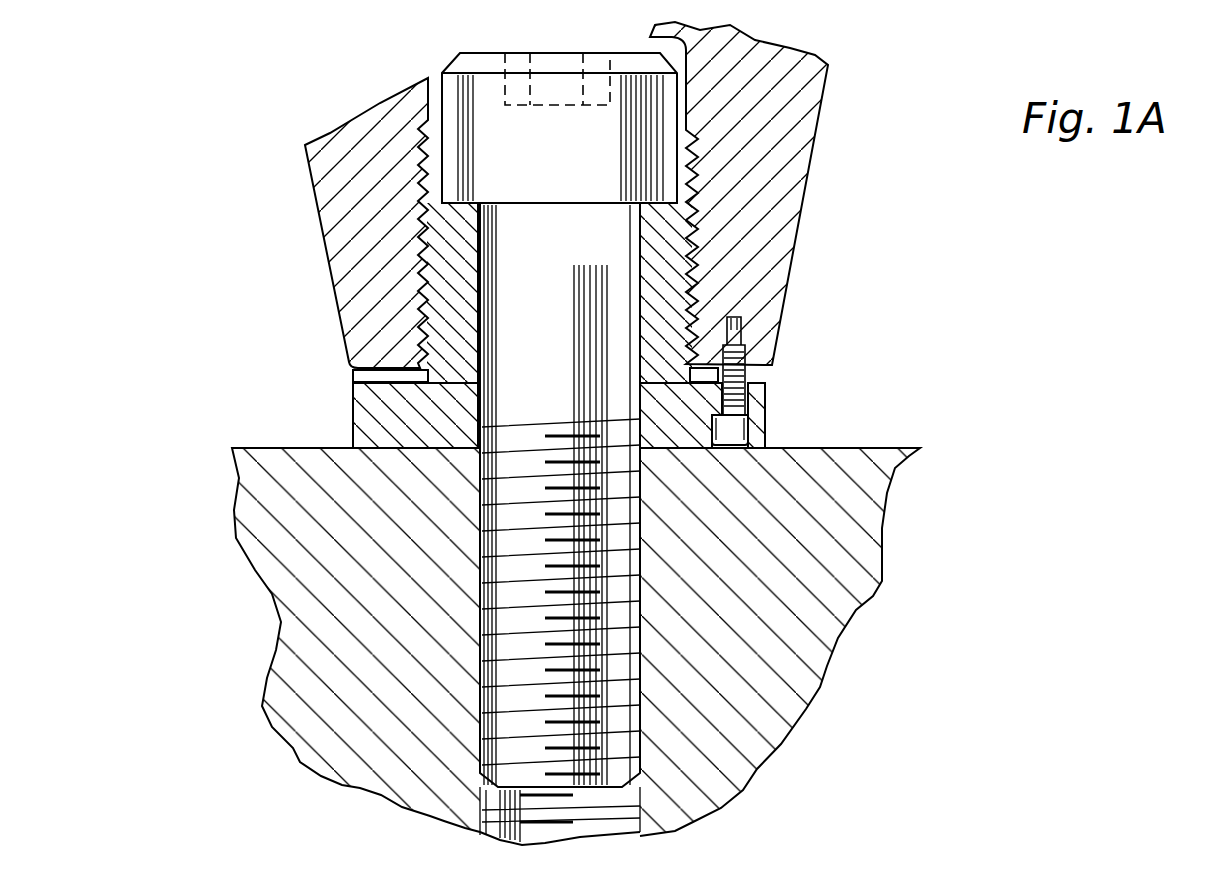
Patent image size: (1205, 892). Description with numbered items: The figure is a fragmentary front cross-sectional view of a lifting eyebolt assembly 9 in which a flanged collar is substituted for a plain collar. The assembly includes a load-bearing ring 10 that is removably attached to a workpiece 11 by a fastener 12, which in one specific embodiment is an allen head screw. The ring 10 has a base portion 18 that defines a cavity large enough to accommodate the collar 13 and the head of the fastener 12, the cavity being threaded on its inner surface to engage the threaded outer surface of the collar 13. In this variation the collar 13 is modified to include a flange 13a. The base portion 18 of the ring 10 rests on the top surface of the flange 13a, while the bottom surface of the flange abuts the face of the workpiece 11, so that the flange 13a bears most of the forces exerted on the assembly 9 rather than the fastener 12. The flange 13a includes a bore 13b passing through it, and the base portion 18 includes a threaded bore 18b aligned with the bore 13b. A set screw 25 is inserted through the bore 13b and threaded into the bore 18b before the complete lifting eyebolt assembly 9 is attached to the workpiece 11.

The lifting eyebolt assembly 9 is at (626, 195).
The load-bearing ring 10 is at (812, 168).
The workpiece 11 is at (270, 448).
The fastener 12 is at (455, 88).
The collar 13 is at (450, 272).
The flange 13a is at (352, 360).
The bore 13b is at (760, 433).
The base portion 18 is at (626, 195).
The threaded bore 18b is at (827, 363).
The set screw 25 is at (733, 405).